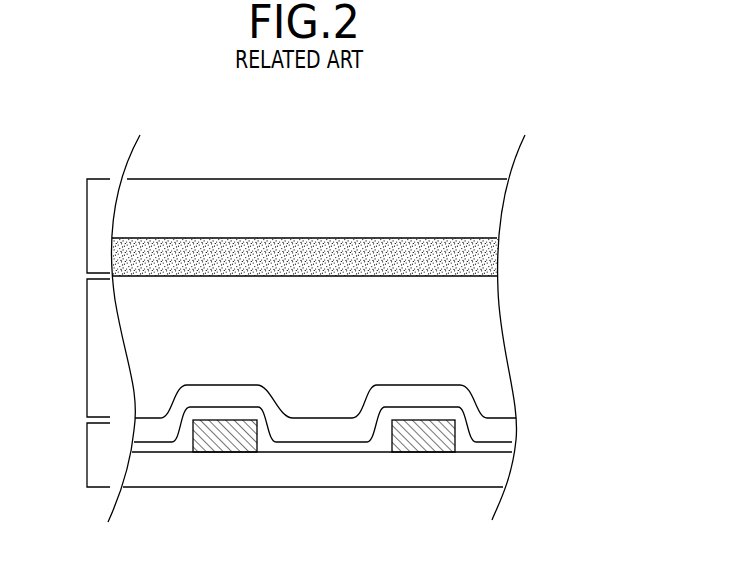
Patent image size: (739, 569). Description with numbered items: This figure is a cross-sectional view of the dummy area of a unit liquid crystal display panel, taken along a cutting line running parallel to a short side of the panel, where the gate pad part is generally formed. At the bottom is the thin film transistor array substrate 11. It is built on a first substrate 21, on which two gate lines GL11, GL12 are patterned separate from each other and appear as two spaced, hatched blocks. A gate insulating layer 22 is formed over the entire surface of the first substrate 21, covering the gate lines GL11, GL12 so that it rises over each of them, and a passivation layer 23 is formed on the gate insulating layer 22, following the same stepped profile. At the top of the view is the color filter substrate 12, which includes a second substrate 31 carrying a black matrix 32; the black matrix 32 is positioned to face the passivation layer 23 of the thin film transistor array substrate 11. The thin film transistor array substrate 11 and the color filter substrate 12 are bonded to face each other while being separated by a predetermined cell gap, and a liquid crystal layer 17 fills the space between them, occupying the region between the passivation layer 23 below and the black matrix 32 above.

The color filter substrate 12 is at (84, 226).
The liquid crystal layer 17 is at (84, 348).
The thin film transistor array substrate 11 is at (84, 455).
The second substrate 31 is at (492, 208).
The black matrix 32 is at (494, 255).
The passivation layer 23 is at (512, 427).
The gate insulating layer 22 is at (510, 447).
The first substrate 21 is at (500, 470).
The gate line GL11 is at (222, 440).
The gate line GL12 is at (422, 440).